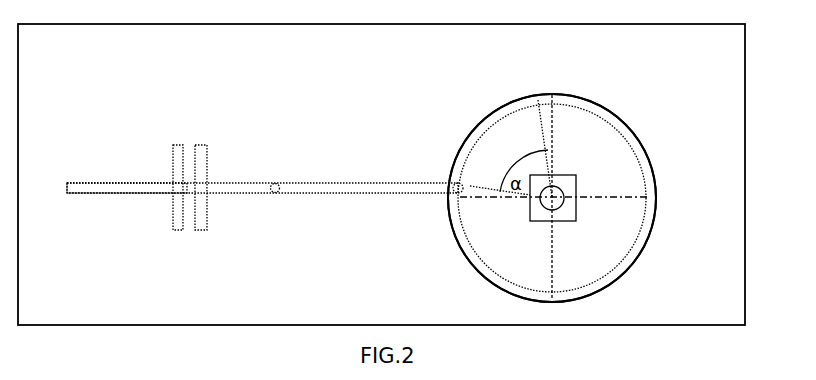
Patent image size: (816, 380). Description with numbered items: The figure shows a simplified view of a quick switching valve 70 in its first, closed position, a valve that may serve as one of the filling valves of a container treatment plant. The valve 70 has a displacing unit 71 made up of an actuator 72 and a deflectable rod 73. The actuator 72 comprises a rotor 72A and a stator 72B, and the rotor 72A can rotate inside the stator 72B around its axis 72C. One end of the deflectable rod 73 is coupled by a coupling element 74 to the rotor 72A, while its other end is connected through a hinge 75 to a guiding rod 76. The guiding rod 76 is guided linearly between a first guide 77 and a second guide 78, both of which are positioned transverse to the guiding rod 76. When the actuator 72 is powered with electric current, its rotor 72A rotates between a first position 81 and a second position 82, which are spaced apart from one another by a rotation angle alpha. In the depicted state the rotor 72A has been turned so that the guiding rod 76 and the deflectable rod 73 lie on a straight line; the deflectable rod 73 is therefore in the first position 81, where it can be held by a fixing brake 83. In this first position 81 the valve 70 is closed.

The valve 70 is at (745, 66).
The displacing unit 71 is at (368, 121).
The actuator 72 is at (592, 84).
The rotor 72A is at (597, 113).
The stator 72B is at (645, 145).
The axis 72C is at (564, 190).
The deflectable rod 73 is at (378, 183).
The coupling element 74 is at (456, 183).
The hinge 75 is at (276, 184).
The guiding rod 76 is at (110, 191).
The first guide 77 is at (172, 160).
The second guide 78 is at (207, 164).
The first position 81 is at (452, 196).
The second position 82 is at (547, 104).
The fixing brake 83 is at (570, 221).